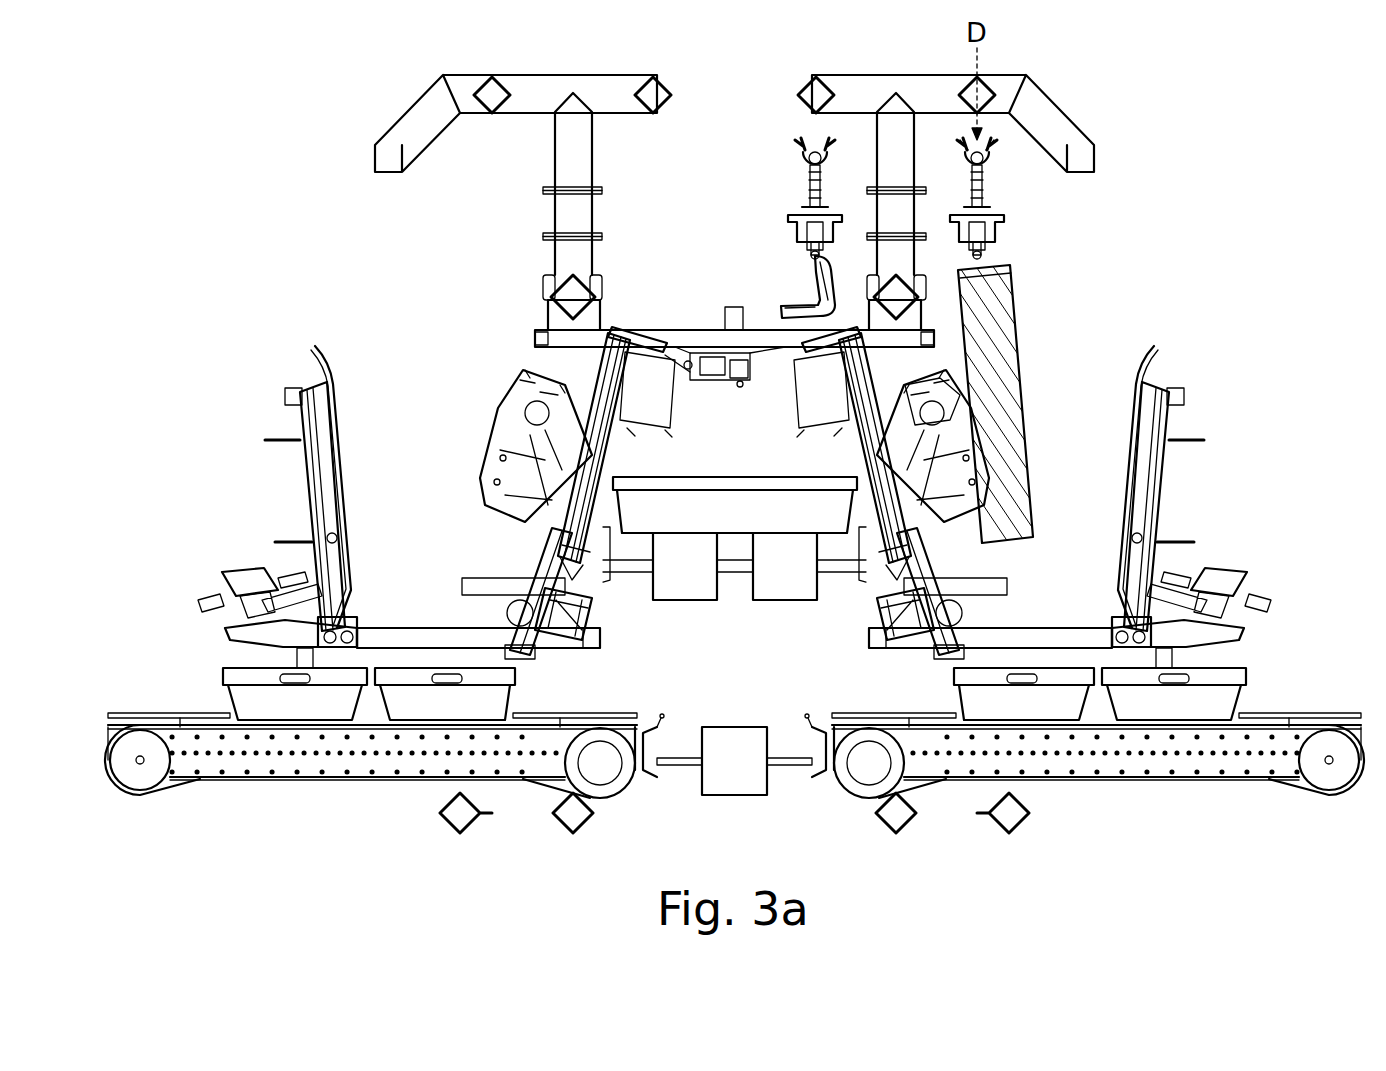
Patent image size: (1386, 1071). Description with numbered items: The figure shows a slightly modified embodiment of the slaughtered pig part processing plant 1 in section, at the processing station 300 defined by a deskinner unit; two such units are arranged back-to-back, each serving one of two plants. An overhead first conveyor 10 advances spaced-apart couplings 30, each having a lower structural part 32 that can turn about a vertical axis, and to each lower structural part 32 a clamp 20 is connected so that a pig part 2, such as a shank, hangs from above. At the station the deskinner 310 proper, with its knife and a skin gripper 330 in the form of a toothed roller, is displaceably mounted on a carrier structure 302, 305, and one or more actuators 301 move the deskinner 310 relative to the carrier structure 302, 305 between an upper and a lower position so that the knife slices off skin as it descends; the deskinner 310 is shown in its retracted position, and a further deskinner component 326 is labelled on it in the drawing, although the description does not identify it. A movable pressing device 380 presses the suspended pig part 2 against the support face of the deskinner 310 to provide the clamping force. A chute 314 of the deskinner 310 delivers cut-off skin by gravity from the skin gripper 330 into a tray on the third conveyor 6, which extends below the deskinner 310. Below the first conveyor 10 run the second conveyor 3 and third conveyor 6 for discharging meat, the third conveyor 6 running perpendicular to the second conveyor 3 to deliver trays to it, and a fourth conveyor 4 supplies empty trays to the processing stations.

The slaughtered pig part processing plant 1 is at (730, 104).
The first conveyor 10 is at (1002, 77).
The coupling 30 is at (1002, 163).
The lower structural part 32 is at (965, 215).
The clamp 20 is at (790, 300).
The pig part 2 is at (968, 378).
The processing station 300 is at (1125, 287).
The actuator 301 is at (770, 352).
The tool holder 326 is at (945, 396).
The deskinner 310 is at (956, 441).
The skin gripper 330 is at (878, 420).
The chute 314 is at (905, 562).
The deskinner carrier structure 305 is at (962, 588).
The deskinner carrier structure portion 302 is at (985, 635).
The pressing device 380 is at (1172, 440).
The fourth conveyor 4 is at (694, 588).
The second conveyor 3 is at (735, 727).
The third conveyor 6 is at (1265, 718).